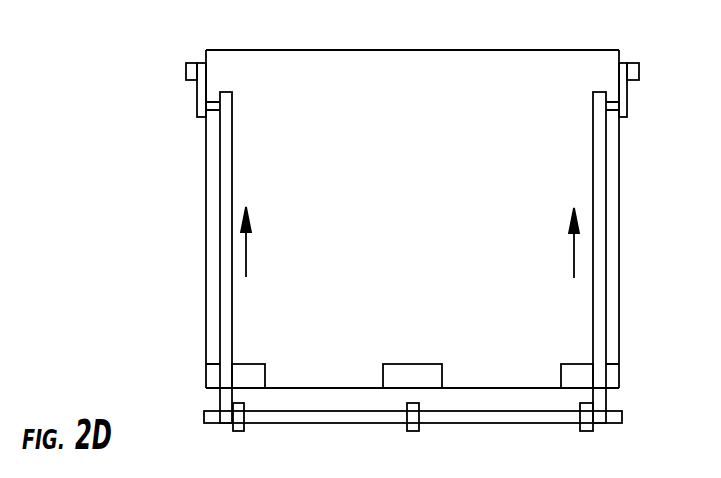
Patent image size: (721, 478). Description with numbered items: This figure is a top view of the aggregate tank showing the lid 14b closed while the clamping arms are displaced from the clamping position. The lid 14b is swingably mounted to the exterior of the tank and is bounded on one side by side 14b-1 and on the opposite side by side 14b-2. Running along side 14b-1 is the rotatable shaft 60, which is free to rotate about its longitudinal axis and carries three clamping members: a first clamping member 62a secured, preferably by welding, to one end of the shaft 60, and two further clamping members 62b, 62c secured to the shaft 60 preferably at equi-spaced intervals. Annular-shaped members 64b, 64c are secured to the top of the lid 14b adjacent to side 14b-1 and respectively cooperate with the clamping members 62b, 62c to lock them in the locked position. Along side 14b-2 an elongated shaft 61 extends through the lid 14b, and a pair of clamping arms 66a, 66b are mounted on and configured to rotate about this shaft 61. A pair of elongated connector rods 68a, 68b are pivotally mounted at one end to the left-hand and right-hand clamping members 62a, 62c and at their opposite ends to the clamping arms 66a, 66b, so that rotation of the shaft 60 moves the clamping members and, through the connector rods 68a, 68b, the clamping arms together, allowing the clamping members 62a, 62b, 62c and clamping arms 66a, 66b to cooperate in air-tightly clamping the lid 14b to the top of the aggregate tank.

The lid 14b is at (412, 198).
The side of lid 14b-1 is at (340, 389).
The side of lid 14b-2 is at (380, 50).
The rotatable shaft 60 is at (318, 418).
The elongated shaft 61 is at (192, 68).
The first clamping member 62a is at (580, 426).
The clamping member 62b is at (407, 426).
The clamping member 62c is at (237, 426).
The annular-shaped member 64b is at (410, 364).
The annular-shaped member 64c is at (250, 364).
The clamping arm 66a is at (627, 103).
The clamping arm 66b is at (197, 108).
The elongated connector rod 68a is at (597, 223).
The elongated connector rod 68b is at (226, 238).